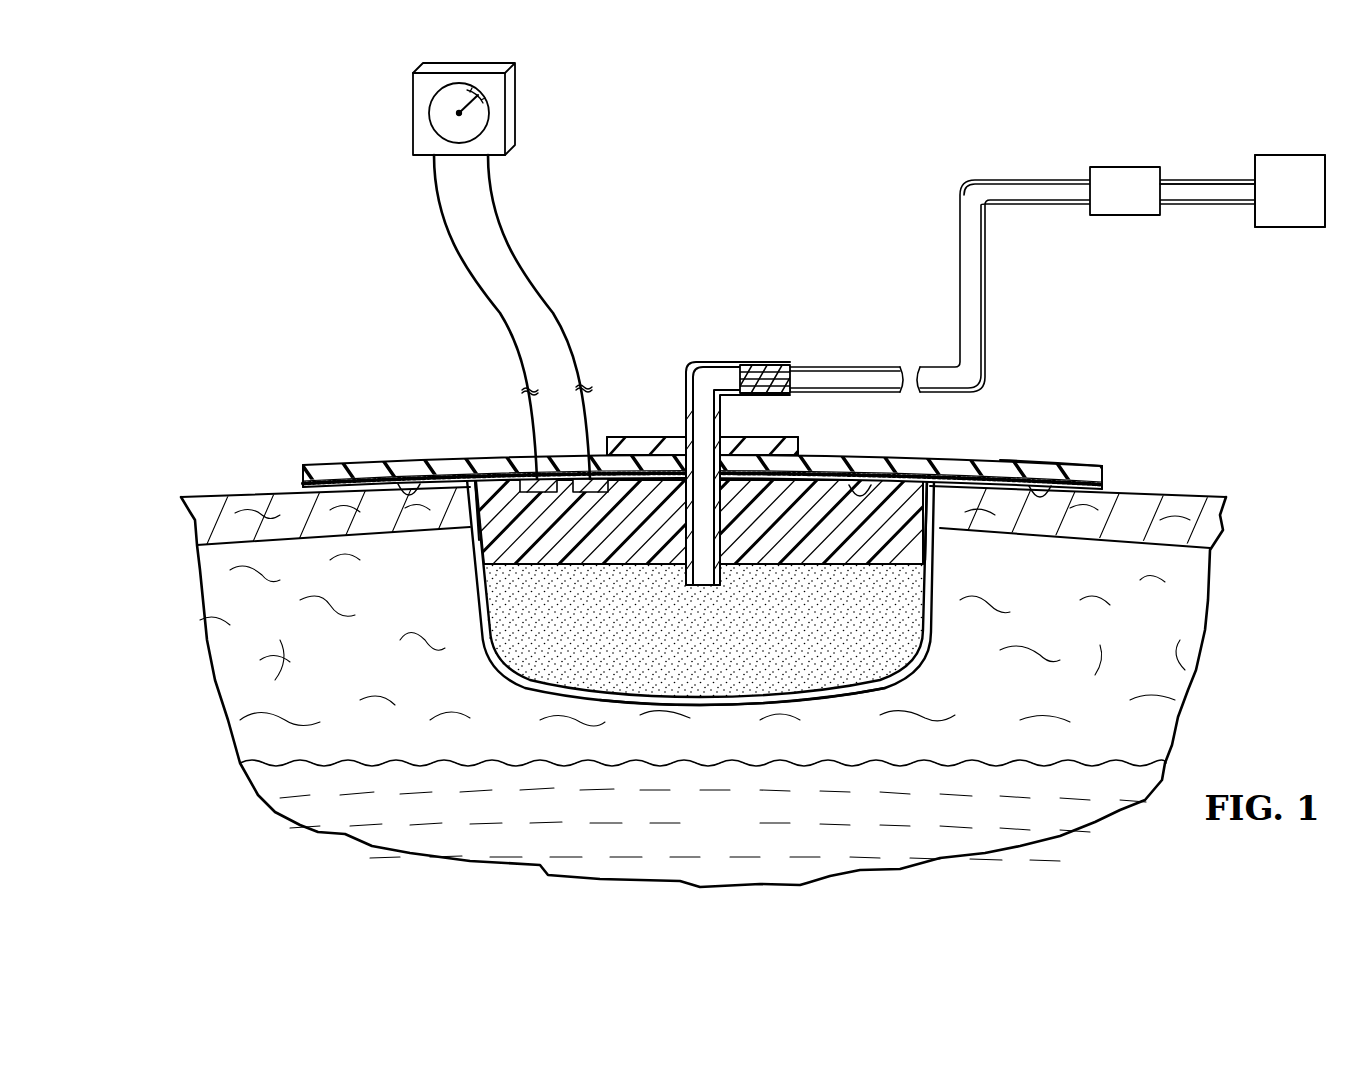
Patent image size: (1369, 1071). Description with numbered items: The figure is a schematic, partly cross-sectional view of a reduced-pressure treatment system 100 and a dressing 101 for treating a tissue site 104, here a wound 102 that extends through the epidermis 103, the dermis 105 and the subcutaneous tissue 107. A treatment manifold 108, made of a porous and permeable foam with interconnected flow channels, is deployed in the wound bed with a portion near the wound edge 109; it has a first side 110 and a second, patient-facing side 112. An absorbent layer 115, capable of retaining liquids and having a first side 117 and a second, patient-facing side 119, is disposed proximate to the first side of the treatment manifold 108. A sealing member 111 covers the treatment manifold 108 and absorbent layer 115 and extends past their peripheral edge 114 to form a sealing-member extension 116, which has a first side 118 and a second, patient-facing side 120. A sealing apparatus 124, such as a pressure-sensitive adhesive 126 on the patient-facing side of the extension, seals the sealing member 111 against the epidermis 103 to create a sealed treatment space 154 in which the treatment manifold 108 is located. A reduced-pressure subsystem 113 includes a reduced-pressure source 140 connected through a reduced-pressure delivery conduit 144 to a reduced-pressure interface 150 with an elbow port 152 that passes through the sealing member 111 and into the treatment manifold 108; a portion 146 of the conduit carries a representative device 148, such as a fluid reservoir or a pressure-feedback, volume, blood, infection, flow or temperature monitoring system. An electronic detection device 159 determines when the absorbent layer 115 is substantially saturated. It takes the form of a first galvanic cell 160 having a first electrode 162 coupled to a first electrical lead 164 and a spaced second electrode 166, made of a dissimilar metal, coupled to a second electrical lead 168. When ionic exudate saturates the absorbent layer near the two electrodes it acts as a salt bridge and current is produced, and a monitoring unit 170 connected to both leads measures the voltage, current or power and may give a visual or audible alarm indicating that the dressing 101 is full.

The reduced-pressure treatment system 100 is at (631, 305).
The dressing 101 is at (358, 457).
The wound 102 is at (932, 620).
The epidermis 103 is at (186, 512).
The tissue site 104 is at (592, 705).
The dermis 105 is at (306, 709).
The subcutaneous tissue 107 is at (681, 832).
The treatment manifold 108 is at (586, 644).
The wound edge 109 is at (467, 462).
The first side 110 is at (934, 552).
The sealing member 111 is at (1100, 463).
The second, patient-facing side 112 is at (828, 705).
The reduced-pressure subsystem 113 is at (1291, 153).
The peripheral edge 114 is at (472, 615).
The absorbent layer 115 is at (746, 526).
The sealing-member extension 116 is at (400, 455).
The first side 117 is at (853, 470).
The first side 118 is at (306, 466).
The second, patient-facing side 119 is at (822, 566).
The second, patient-facing side 120 is at (410, 470).
The sealing apparatus 124 is at (1103, 486).
The pressure-sensitive adhesive 126 is at (303, 483).
The reduced-pressure source 140 is at (1290, 227).
The reduced-pressure delivery conduit 144 is at (885, 367).
The portion 146 is at (1088, 215).
The device 148 is at (1125, 167).
The reduced-pressure interface 150 is at (764, 363).
The elbow port 152 is at (700, 364).
The sealed treatment space 154 is at (473, 540).
The electronic detection device 159 is at (520, 100).
The first galvanic cell 160 is at (534, 452).
The first electrode 162 is at (538, 492).
The first electrical lead 164 is at (436, 192).
The second electrode 166 is at (593, 492).
The second electrical lead 168 is at (496, 180).
The monitoring unit 170 is at (413, 110).